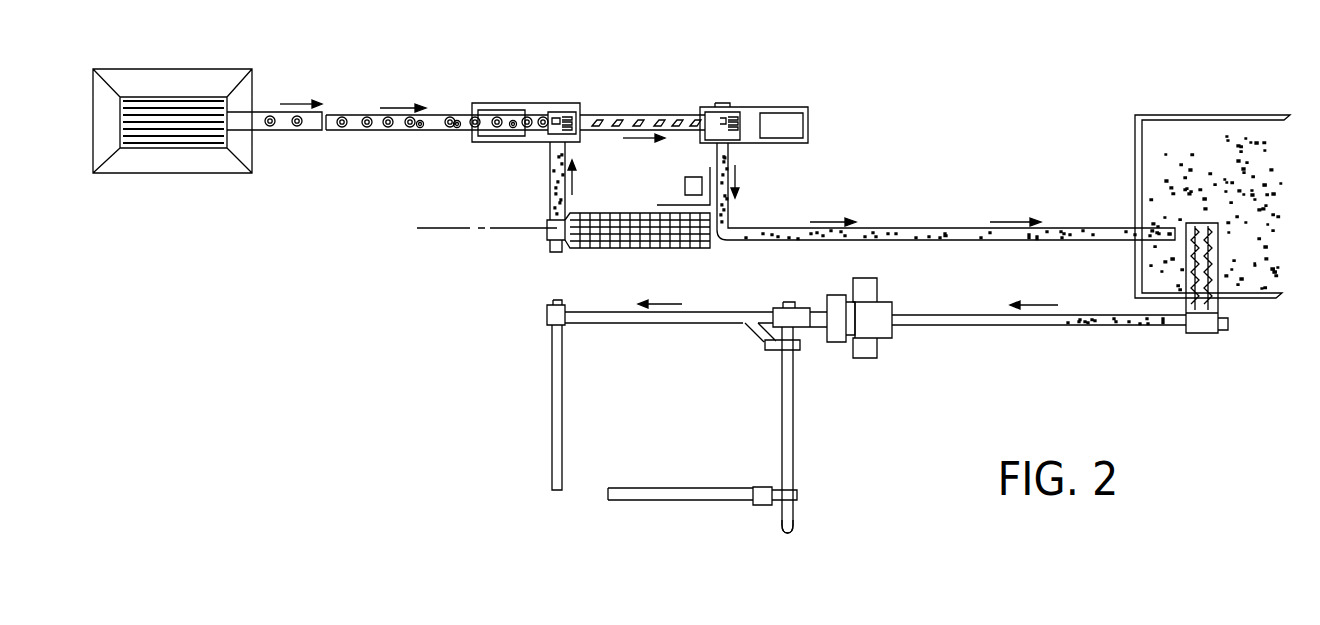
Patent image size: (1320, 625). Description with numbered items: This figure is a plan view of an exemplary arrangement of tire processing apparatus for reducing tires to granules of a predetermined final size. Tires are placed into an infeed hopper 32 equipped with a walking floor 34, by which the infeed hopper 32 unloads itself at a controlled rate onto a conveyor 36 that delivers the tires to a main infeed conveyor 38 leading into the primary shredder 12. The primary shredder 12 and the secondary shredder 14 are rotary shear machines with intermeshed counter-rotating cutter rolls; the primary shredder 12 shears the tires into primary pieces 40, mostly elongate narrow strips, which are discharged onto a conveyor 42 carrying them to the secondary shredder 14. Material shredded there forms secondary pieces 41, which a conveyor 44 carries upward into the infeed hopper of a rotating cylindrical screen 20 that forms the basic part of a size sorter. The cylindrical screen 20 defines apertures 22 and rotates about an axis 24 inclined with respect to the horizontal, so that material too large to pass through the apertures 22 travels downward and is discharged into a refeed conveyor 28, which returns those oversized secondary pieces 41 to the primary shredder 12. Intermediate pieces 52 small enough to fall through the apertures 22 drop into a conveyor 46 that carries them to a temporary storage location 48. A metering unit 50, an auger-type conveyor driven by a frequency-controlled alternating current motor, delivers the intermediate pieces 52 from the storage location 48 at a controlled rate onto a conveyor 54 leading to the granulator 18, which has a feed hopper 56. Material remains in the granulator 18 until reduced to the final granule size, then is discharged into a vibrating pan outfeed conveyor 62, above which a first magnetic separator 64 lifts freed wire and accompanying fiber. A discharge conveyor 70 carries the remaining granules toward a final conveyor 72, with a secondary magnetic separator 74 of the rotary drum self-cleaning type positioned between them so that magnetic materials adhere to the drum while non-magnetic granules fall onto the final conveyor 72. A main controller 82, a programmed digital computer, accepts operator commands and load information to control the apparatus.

The primary shredder 12 is at (571, 103).
The secondary shredder 14 is at (753, 107).
The granulator 18 is at (878, 302).
The cylindrical screen 20 is at (630, 212).
The apertures 22 is at (652, 249).
The axis 24 is at (477, 222).
The refeed conveyor 28 is at (550, 172).
The infeed hopper 32 is at (232, 68).
The walking floor 34 is at (138, 105).
The conveyor 36 is at (257, 113).
The main infeed conveyor 38 is at (350, 116).
The primary pieces 40 is at (682, 125).
The secondary pieces 41 is at (728, 153).
The conveyor 42 is at (620, 124).
The conveyor 44 is at (727, 215).
The conveyor 46 is at (958, 233).
The temporary storage location 48 is at (1135, 162).
The metering unit 50 is at (1222, 302).
The intermediate pieces 52 is at (938, 235).
The conveyor 54 is at (1020, 322).
The feed hopper 56 is at (885, 340).
The outfeed conveyor 62 is at (795, 322).
The first magnetic separator 64 is at (773, 350).
The discharge conveyor 70 is at (790, 460).
The final conveyor 72 is at (786, 523).
The secondary magnetic separator 74 is at (797, 496).
The main controller 82 is at (685, 187).